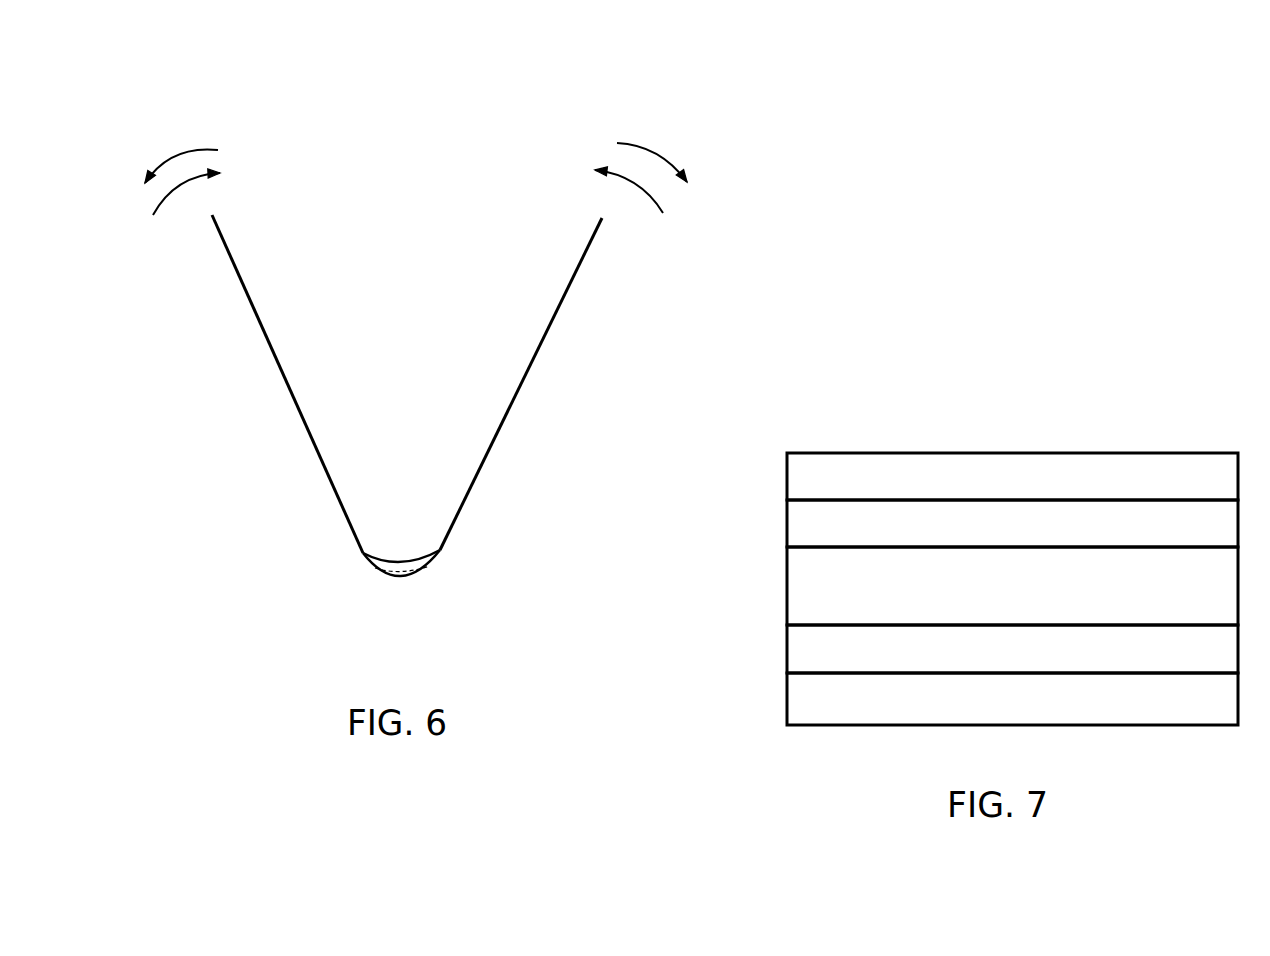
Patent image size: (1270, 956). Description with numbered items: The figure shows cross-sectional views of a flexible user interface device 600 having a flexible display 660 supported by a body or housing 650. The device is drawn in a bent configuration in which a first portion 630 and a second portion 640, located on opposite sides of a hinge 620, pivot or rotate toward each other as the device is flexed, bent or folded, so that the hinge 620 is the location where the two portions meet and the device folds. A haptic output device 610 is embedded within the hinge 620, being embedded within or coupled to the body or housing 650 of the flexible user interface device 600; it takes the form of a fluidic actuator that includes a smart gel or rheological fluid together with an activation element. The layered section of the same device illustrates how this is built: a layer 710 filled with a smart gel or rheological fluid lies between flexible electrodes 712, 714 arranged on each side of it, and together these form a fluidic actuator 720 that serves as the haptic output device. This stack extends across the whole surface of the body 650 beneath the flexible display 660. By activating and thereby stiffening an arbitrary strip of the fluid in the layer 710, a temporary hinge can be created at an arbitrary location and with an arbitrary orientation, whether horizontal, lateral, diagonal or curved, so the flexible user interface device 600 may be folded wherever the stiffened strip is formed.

In FIG. 6, the flexible user interface device 600 is at (412, 348).
In FIG. 6, the haptic output device 610 is at (398, 575).
In FIG. 6, the hinge 620 is at (393, 550).
In FIG. 6, the first portion 630 is at (250, 351).
In FIG. 6, the second portion 640 is at (563, 346).
In FIG. 6, the body or housing 650 is at (303, 420).
In FIG. 7, the body or housing 650 is at (852, 715).
In FIG. 6, the flexible display 660 is at (540, 337).
In FIG. 7, the flexible display 660 is at (852, 492).
In FIG. 7, the layer filled with smart gel or rheological fluid 710 is at (852, 603).
In FIG. 7, the flexible electrode 712 is at (852, 540).
In FIG. 7, the flexible electrode 714 is at (1012, 649).
In FIG. 7, the fluidic actuator 720 is at (959, 586).